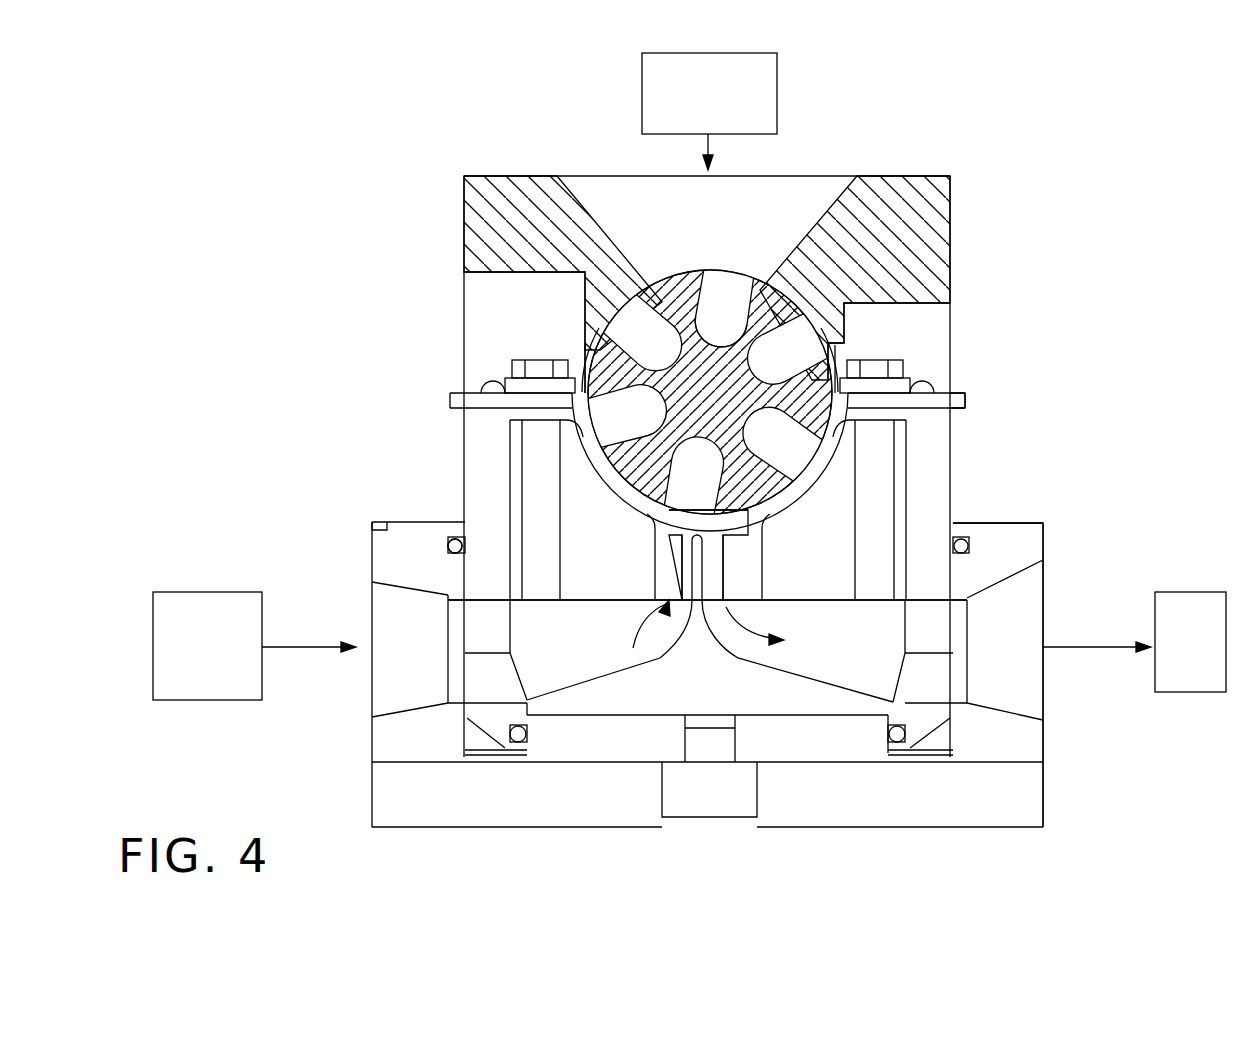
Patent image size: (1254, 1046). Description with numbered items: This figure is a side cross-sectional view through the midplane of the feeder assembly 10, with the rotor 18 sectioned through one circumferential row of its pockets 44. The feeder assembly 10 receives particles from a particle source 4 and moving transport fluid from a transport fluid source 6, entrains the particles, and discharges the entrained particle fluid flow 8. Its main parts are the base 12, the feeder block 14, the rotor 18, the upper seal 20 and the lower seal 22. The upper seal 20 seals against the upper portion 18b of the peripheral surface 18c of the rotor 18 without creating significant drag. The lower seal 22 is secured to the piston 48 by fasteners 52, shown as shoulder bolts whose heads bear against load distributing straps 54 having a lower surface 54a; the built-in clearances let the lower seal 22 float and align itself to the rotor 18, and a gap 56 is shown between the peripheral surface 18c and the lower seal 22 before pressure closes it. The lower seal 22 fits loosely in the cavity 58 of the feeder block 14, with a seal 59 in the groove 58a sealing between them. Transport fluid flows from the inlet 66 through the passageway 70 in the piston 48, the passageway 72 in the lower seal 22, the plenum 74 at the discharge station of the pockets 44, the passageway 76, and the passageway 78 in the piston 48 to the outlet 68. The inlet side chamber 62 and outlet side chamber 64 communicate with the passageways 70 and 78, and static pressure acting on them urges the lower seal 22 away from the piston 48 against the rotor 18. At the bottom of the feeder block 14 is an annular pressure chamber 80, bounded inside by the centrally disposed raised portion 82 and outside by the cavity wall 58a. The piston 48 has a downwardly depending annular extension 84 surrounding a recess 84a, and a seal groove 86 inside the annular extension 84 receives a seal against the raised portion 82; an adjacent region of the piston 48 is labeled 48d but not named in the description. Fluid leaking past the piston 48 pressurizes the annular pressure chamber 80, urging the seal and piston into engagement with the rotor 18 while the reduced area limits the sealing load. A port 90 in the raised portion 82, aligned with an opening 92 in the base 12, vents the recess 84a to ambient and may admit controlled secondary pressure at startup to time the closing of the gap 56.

The particle source 4 is at (699, 109).
The transport fluid source 6 is at (199, 661).
The entrained particle fluid flow 8 is at (1181, 661).
The feeder assembly 10 is at (374, 188).
The base 12 is at (1025, 810).
The feeder block 14 is at (1025, 738).
The rotor 18 is at (691, 399).
The upper portion 18b is at (798, 310).
The peripheral surface 18c is at (676, 272).
The upper seal 20 is at (920, 207).
The lower seal 22 is at (930, 437).
The pockets 44 is at (810, 362).
The piston 48 is at (686, 695).
The groove 48d is at (475, 748).
The fasteners 52 is at (884, 366).
The load distributing straps 54 is at (912, 384).
The lower surface 54a is at (885, 402).
The gap 56 is at (760, 528).
The cavity 58 is at (925, 572).
The cavity wall 58a is at (452, 540).
The seal 59 is at (448, 545).
The inlet side chamber 62 is at (598, 559).
The outlet side chamber 64 is at (804, 559).
The inlet 66 is at (398, 604).
The outlet 68 is at (1030, 608).
The passageway 70 is at (569, 647).
The passageway 72 is at (688, 563).
The plenum 74 is at (700, 528).
The passageway 76 is at (712, 578).
The passageway 78 is at (818, 644).
The annular pressure chamber 80 is at (494, 755).
The centrally disposed raised portion 82 is at (611, 749).
The annular extension 84 is at (482, 713).
The recess 84a is at (786, 718).
The seal groove 86 is at (512, 726).
The port 90 is at (694, 759).
The opening 92 is at (694, 804).